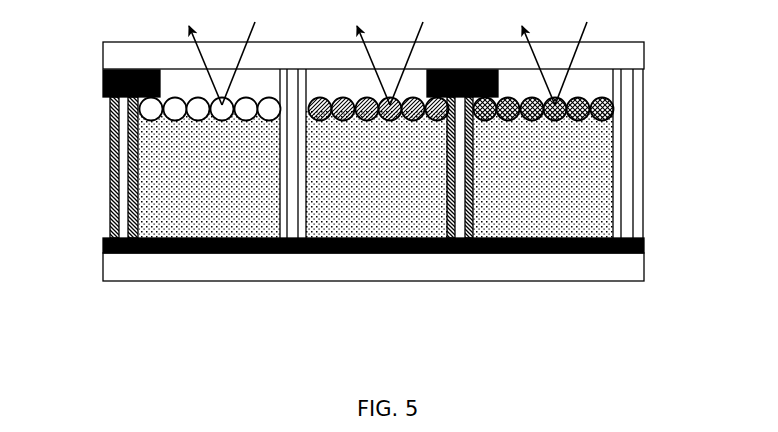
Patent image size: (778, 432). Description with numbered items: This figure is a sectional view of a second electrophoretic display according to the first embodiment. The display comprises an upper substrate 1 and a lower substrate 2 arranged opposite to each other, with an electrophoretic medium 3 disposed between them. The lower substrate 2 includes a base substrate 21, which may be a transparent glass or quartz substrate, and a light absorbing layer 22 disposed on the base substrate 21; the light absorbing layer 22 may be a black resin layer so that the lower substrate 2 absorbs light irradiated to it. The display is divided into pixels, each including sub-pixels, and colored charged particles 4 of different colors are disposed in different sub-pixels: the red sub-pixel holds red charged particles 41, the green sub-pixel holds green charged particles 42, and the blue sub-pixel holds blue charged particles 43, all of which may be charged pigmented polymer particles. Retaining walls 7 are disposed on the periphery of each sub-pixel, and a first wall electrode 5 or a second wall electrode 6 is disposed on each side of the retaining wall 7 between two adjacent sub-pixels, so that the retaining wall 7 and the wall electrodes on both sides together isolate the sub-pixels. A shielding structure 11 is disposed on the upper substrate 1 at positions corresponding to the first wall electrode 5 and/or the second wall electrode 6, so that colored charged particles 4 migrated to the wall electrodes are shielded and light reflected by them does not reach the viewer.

The upper substrate 1 is at (618, 57).
The shielding structure 11 is at (103, 85).
The first wall electrode 5 is at (110, 137).
The electrophoretic medium 3 is at (603, 167).
The second wall electrode 6 is at (637, 104).
The retaining wall 7 is at (627, 137).
The colored charged particles 4 is at (377, 238).
The red charged particles 41 is at (151, 112).
The green charged particles 42 is at (320, 112).
The blue charged particles 43 is at (544, 214).
The lower substrate 2 is at (416, 255).
The light absorbing layer 22 is at (644, 241).
The base substrate 21 is at (625, 267).